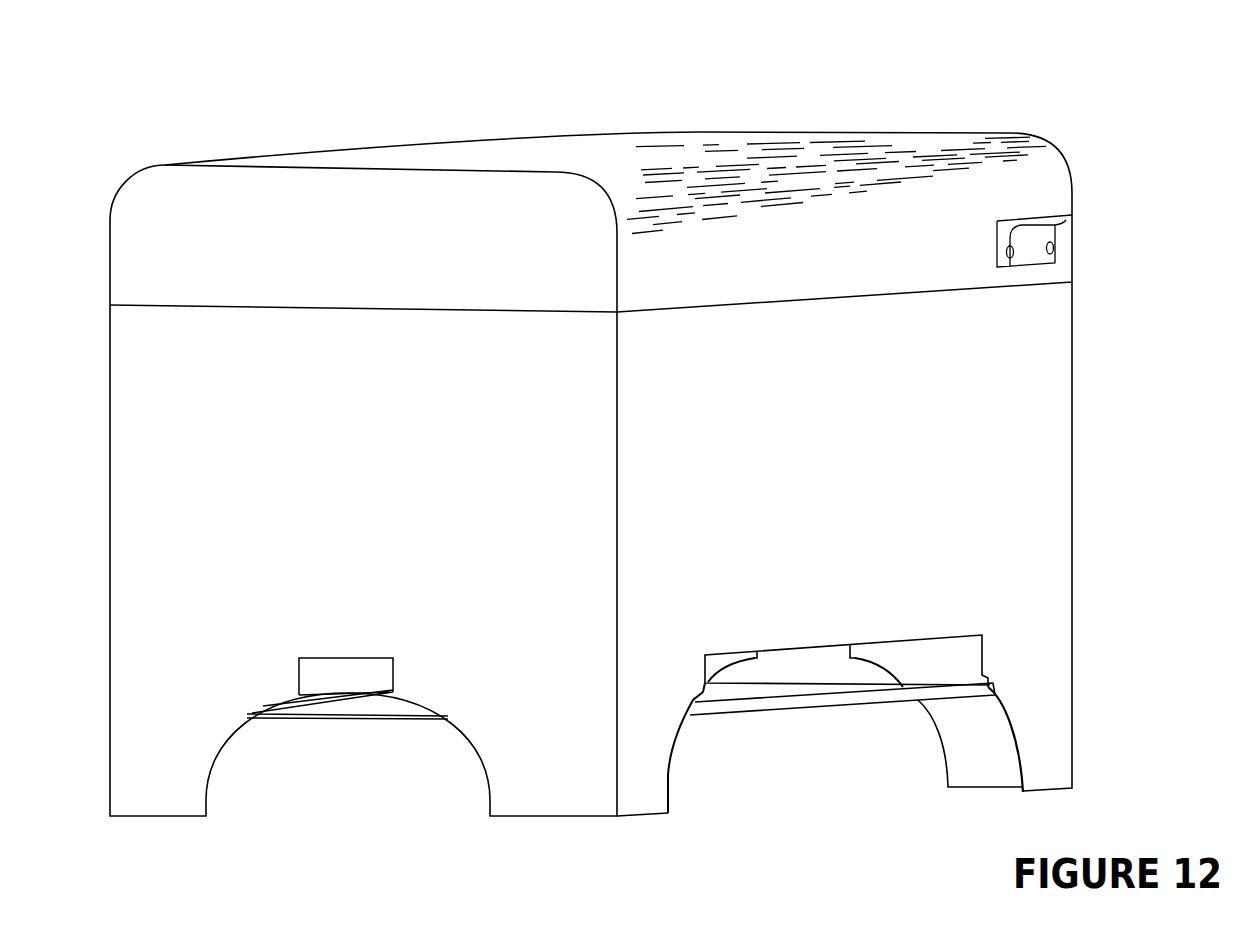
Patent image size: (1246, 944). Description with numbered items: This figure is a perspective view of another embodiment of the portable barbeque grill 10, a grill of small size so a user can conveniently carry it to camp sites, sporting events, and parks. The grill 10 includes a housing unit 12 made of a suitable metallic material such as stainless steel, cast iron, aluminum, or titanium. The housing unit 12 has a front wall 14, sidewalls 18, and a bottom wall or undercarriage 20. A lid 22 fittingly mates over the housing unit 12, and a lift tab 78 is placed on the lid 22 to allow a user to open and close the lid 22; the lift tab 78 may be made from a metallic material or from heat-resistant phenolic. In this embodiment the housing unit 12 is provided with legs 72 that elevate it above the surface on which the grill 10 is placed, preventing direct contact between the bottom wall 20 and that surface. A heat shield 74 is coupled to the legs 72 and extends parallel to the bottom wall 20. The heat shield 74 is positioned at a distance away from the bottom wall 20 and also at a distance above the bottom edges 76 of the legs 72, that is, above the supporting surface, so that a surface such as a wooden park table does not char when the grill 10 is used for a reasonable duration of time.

The portable barbeque grill 10 is at (637, 424).
The housing unit 12 is at (624, 477).
The front wall 14 is at (833, 485).
The sidewalls 18 is at (363, 500).
The bottom wall 20 is at (808, 643).
The lid 22 is at (363, 254).
The legs 72 is at (195, 784).
The heat shield 74 is at (813, 700).
The bottom edges 76 is at (668, 817).
The lift tab 78 is at (1035, 241).